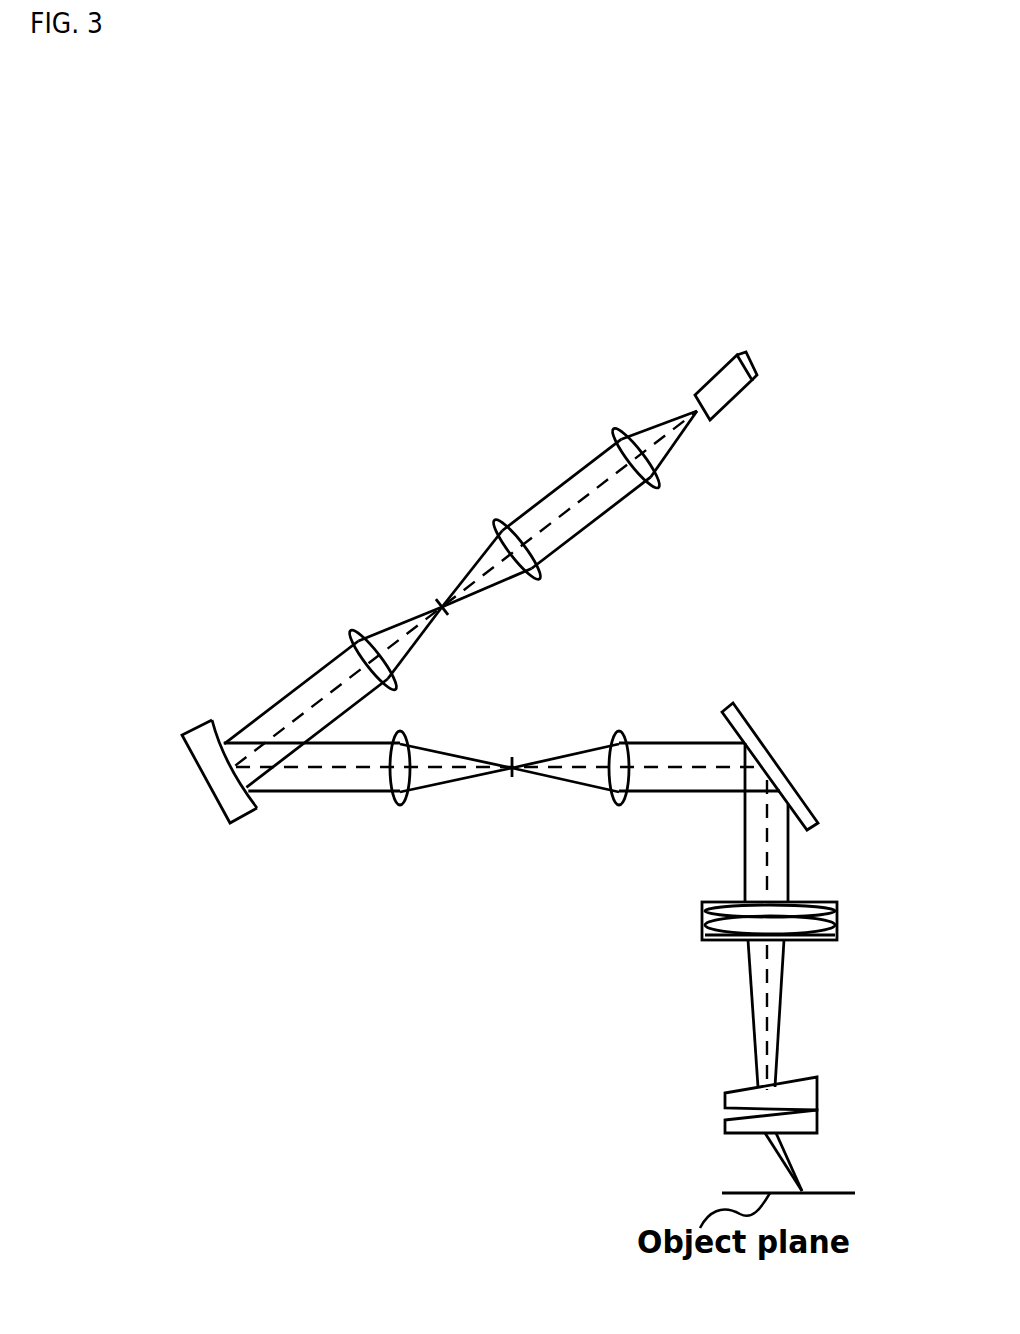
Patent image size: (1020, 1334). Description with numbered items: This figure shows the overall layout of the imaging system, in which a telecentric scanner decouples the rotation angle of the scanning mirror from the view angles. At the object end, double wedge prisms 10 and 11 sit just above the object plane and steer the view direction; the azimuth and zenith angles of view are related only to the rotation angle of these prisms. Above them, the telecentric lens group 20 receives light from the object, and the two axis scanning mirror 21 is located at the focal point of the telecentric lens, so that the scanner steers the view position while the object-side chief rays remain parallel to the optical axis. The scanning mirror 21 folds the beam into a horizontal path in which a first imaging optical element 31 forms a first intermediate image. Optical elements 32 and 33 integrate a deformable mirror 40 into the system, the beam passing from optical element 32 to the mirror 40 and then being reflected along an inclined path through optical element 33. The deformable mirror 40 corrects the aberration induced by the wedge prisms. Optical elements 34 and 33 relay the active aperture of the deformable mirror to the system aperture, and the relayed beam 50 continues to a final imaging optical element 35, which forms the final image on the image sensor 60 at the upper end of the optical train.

The wedge prism 10 is at (728, 1097).
The wedge prism 11 is at (728, 1133).
The telecentric lens group 20 is at (703, 920).
The two axis scanning mirror 21 is at (780, 765).
The first imaging optical element 31 is at (628, 735).
The optical element 32 is at (398, 806).
The optical element 33 is at (352, 632).
The optical element 34 is at (495, 521).
The final imaging optical element 35 is at (621, 430).
The deformable mirror 40 is at (220, 818).
The light beam 50 is at (548, 488).
The image sensor 60 is at (745, 400).